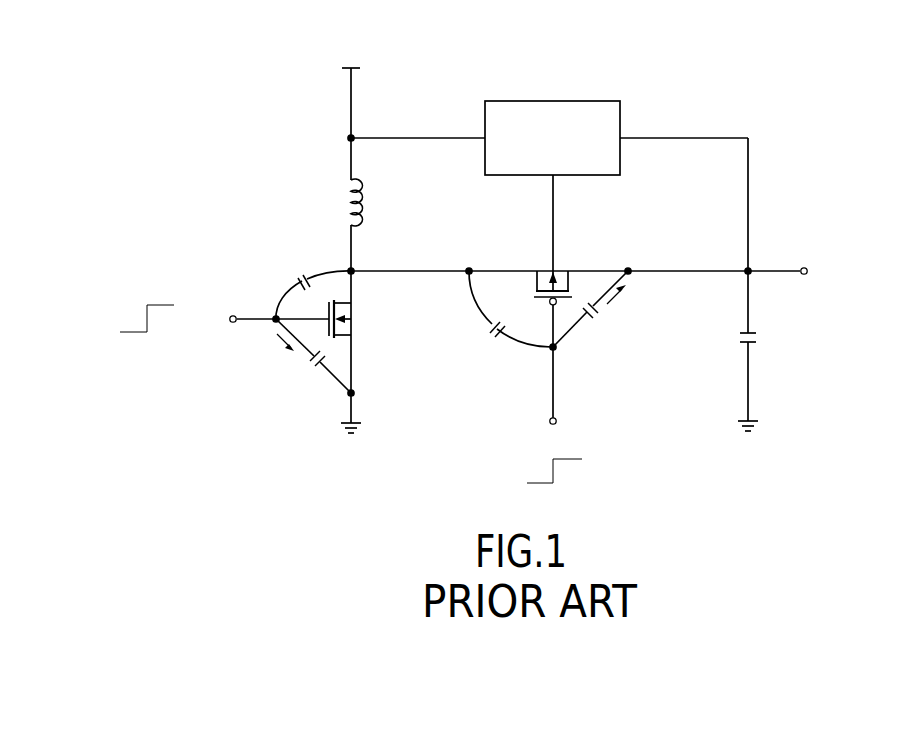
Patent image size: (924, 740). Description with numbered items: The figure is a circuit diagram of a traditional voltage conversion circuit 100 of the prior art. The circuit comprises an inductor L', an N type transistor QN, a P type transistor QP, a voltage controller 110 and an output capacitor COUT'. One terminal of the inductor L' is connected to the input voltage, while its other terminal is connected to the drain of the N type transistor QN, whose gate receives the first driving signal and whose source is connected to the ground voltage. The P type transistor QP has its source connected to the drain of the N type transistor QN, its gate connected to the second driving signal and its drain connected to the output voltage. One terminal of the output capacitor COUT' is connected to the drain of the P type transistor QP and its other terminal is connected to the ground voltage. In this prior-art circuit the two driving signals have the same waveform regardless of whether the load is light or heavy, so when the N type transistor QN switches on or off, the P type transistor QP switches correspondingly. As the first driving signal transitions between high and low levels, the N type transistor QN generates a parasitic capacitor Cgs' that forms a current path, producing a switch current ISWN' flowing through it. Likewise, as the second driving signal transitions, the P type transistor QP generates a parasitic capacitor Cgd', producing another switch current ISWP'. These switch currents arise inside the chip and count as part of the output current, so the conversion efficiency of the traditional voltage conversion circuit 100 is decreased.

The traditional voltage conversion circuit 100 is at (198, 30).
The voltage controller 110 is at (603, 101).
The inductor L' is at (339, 202).
The N type transistor QN is at (362, 346).
The P type transistor QP is at (533, 246).
The parasitic capacitor Cgd' is at (446, 299).
The parasitic capacitor Cgs' is at (411, 340).
The switch current ISWN' is at (251, 356).
The switch current ISWP' is at (653, 298).
The output capacitor COUT' is at (790, 339).